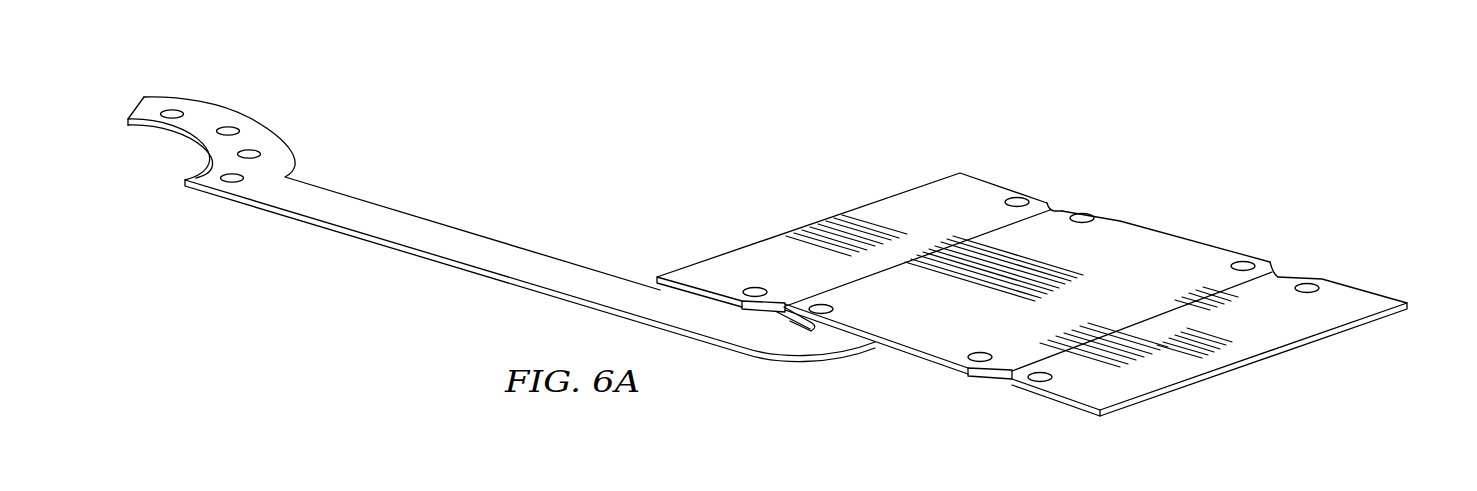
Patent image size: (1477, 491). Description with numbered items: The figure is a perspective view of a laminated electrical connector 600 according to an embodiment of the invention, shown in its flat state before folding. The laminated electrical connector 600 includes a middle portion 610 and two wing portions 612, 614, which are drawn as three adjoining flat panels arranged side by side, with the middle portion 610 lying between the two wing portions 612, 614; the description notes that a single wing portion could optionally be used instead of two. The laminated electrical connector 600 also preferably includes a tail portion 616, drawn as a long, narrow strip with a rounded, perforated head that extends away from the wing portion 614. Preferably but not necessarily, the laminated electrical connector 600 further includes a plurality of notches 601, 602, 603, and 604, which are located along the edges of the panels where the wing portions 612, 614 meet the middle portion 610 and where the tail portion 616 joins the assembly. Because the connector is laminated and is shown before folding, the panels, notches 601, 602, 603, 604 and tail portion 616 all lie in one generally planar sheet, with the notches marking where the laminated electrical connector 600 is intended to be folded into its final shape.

The laminated electrical connector 600 is at (685, 144).
The notch 601 is at (775, 311).
The notch 602 is at (1277, 272).
The notch 603 is at (1052, 211).
The notch 604 is at (1012, 379).
The middle portion 610 is at (1122, 266).
The wing portion 612 is at (1278, 328).
The wing portion 614 is at (958, 223).
The tail portion 616 is at (410, 252).